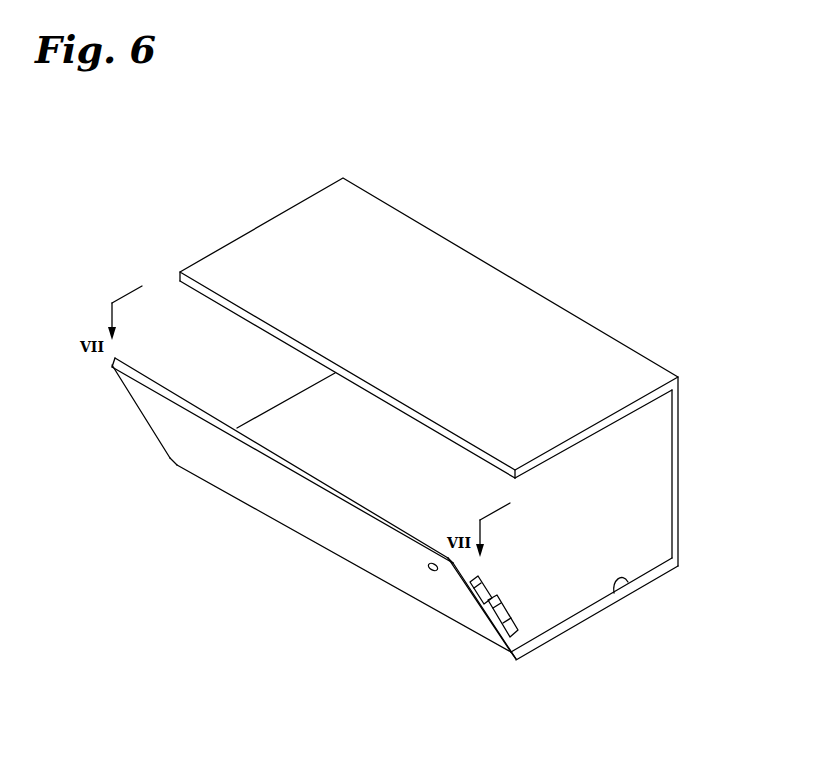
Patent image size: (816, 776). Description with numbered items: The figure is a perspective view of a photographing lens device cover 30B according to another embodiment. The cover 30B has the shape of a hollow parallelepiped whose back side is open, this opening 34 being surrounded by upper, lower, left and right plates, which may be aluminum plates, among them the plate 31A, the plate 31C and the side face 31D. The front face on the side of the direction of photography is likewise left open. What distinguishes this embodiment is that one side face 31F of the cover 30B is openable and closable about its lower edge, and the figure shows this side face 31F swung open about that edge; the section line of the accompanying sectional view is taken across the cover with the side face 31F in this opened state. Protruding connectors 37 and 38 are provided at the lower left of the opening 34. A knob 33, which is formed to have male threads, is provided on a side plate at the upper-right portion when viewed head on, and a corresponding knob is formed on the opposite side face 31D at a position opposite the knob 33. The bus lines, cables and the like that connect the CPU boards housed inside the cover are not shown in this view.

The photographing lens device cover 30B is at (553, 212).
The aluminum plate 31A is at (633, 363).
The aluminum plate 31C is at (580, 622).
The side face 31D is at (679, 472).
The one side face 31F is at (338, 538).
The knob 33 is at (430, 573).
The opening 34 is at (623, 582).
The protruding connector 37 is at (513, 623).
The protruding connector 38 is at (492, 597).